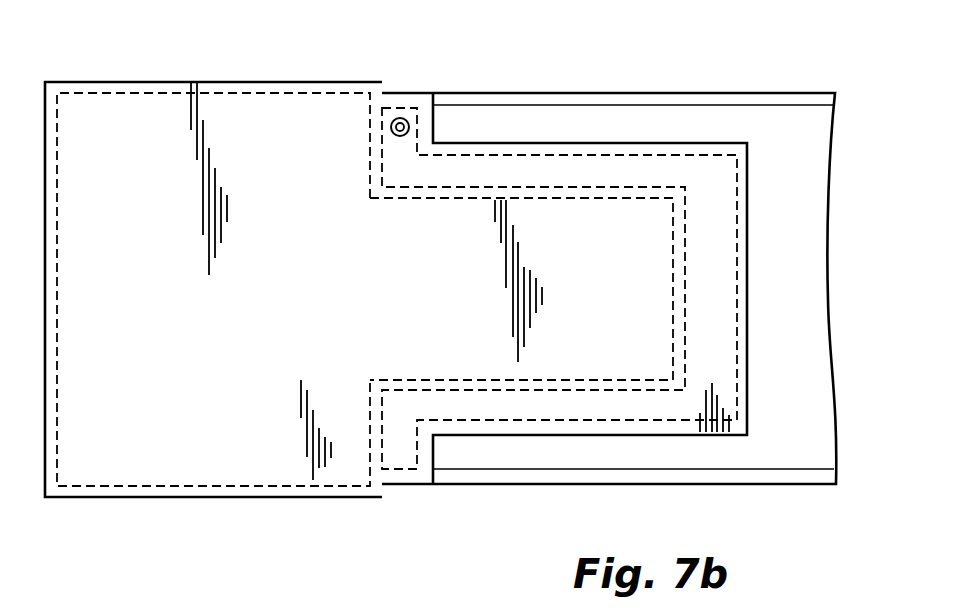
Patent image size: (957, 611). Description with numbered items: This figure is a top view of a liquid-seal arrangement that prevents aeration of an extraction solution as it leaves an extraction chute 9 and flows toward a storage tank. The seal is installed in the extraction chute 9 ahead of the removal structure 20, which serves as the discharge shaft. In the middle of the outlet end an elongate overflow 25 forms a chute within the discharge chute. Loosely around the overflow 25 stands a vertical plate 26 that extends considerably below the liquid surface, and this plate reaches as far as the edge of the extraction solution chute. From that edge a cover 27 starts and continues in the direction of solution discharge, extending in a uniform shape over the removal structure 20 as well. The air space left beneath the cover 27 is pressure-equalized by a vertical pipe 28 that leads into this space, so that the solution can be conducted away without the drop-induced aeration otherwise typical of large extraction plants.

The extraction chute 9 is at (812, 125).
The removal structure 20 is at (218, 463).
The elongate overflow 25 is at (632, 190).
The vertical plate 26 is at (749, 186).
The cover 27 is at (490, 162).
The vertical pipe 28 is at (405, 118).